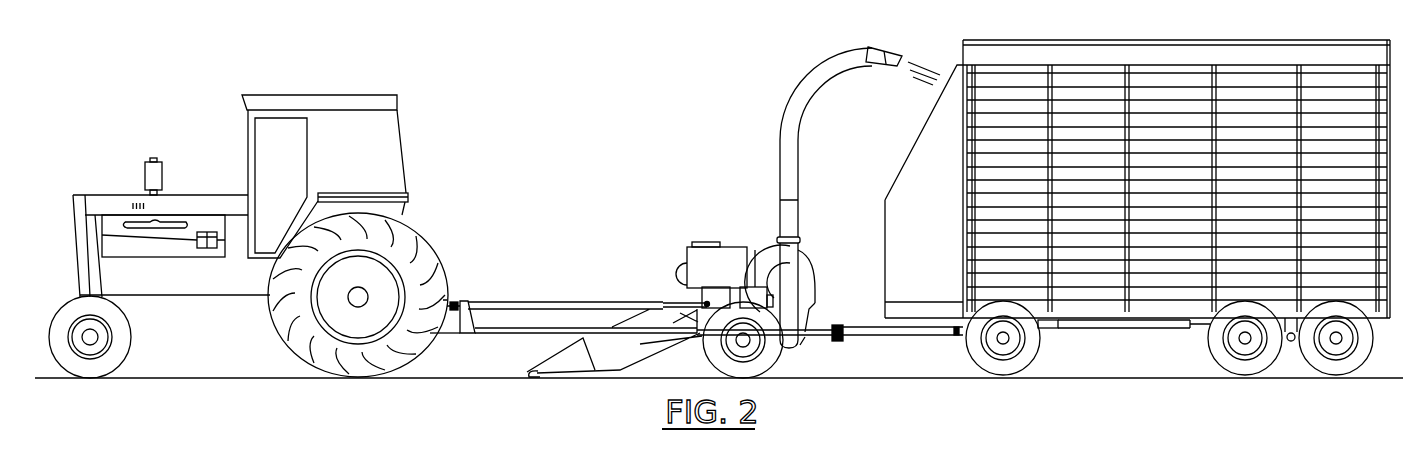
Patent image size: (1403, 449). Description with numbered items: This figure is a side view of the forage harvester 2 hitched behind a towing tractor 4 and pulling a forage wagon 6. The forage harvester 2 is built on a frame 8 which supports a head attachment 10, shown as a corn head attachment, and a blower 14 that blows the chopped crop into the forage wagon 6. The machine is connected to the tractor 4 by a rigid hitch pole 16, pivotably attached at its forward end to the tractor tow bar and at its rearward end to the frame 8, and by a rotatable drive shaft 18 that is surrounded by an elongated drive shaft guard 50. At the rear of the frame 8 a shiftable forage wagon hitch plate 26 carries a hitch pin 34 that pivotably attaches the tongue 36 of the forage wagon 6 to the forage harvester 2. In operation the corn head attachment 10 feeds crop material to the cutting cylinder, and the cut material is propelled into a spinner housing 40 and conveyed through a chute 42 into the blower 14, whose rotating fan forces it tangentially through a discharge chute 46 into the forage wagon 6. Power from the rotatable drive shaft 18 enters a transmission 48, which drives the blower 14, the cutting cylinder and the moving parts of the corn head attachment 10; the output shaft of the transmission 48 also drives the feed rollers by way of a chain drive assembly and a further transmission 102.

The forage harvester 2 is at (725, 236).
The tractor 4 is at (407, 148).
The forage wagon 6 is at (1165, 32).
The frame 8 is at (827, 328).
The head attachment 10 is at (540, 357).
The blower 14 is at (806, 258).
The rigid hitch pole 16 is at (482, 337).
The rotatable drive shaft 18 is at (677, 297).
The forage wagon hitch plate 26 is at (830, 337).
The hitch pin 34 is at (837, 340).
The tongue 36 is at (908, 335).
The spinner housing 40 is at (815, 278).
The chute 42 is at (813, 308).
The discharge chute 46 is at (793, 218).
The transmission 48 is at (755, 250).
The drive shaft guard 50 is at (505, 300).
The transmission 102 is at (715, 287).